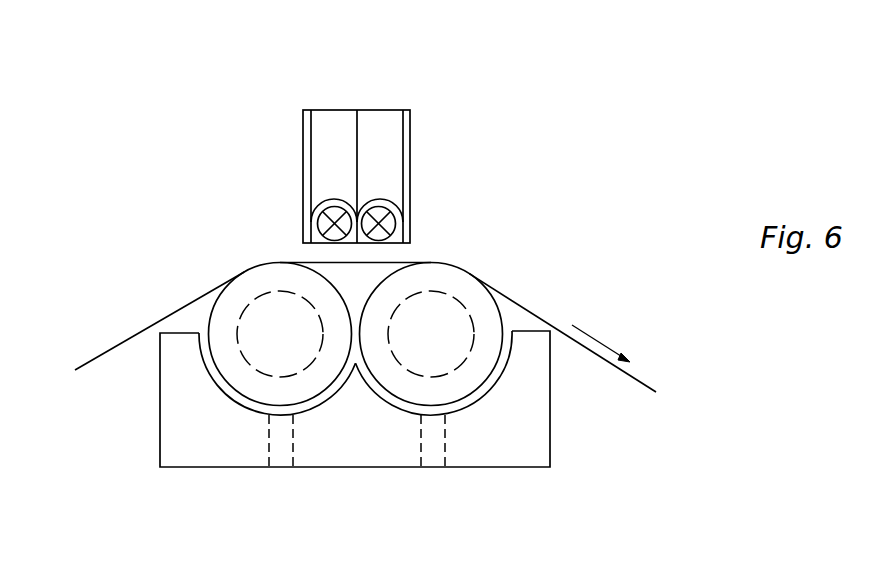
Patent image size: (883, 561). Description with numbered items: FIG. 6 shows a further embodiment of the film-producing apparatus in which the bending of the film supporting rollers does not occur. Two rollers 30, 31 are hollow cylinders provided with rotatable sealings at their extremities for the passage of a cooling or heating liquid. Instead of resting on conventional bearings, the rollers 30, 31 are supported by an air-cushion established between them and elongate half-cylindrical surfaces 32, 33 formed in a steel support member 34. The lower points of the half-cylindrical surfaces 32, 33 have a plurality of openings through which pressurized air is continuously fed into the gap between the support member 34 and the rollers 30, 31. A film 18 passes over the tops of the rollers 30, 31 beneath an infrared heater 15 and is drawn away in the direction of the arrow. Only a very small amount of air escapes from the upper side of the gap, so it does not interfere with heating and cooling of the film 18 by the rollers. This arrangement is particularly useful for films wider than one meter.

The infrared heater 15 is at (378, 105).
The film 18 is at (128, 341).
The roller 30 is at (256, 284).
The roller 31 is at (462, 279).
The half-cylindrical surface 32 is at (226, 392).
The half-cylindrical surface 33 is at (482, 396).
The steel support member 34 is at (542, 449).